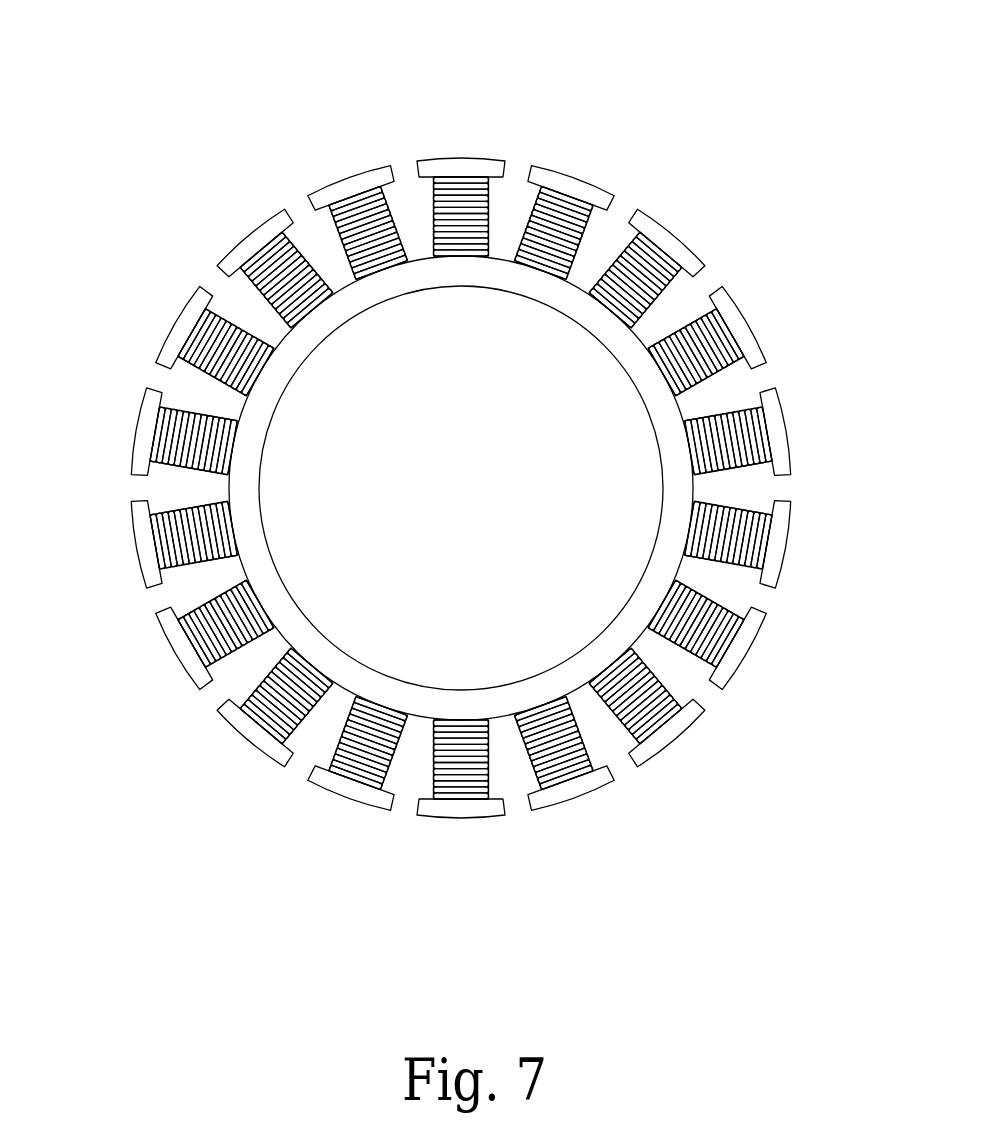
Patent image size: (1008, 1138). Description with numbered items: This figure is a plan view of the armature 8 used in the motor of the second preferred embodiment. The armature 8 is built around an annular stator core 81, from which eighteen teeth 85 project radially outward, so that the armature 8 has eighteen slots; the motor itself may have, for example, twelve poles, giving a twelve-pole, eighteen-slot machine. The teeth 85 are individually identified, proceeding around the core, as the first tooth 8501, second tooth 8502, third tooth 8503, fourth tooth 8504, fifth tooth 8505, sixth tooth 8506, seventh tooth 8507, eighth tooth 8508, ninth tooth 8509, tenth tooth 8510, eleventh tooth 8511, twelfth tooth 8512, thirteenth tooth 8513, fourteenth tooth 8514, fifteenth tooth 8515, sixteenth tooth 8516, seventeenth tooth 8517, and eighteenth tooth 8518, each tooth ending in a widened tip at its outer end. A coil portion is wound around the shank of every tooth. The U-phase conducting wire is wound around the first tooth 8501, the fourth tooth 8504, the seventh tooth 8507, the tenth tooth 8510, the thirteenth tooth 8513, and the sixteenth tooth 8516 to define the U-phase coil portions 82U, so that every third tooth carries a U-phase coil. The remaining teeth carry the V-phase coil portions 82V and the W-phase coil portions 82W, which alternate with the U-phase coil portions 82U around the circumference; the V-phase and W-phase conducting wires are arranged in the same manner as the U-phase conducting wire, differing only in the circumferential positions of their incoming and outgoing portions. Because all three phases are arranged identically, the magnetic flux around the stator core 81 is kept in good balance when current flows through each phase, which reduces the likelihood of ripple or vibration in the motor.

The armature 8 is at (215, 97).
The stator core 81 is at (342, 303).
The tooth 85 is at (545, 165).
The U-phase coil portion 82U is at (563, 223).
The V-phase coil portion 82V is at (655, 265).
The W-phase coil portion 82W is at (722, 347).
The first tooth 8501 is at (558, 186).
The second tooth 8502 is at (668, 240).
The third tooth 8503 is at (735, 320).
The fourth tooth 8504 is at (775, 425).
The fifth tooth 8505 is at (772, 545).
The sixth tooth 8506 is at (745, 642).
The seventh tooth 8507 is at (663, 735).
The eighth tooth 8508 is at (580, 790).
The ninth tooth 8509 is at (460, 810).
The tenth tooth 8510 is at (345, 802).
The eleventh tooth 8511 is at (243, 740).
The twelfth tooth 8512 is at (182, 645).
The thirteenth tooth 8513 is at (145, 552).
The fourteenth tooth 8514 is at (141, 441).
The fifteenth tooth 8515 is at (171, 347).
The sixteenth tooth 8516 is at (248, 243).
The seventeenth tooth 8517 is at (355, 180).
The eighteenth tooth 8518 is at (441, 165).